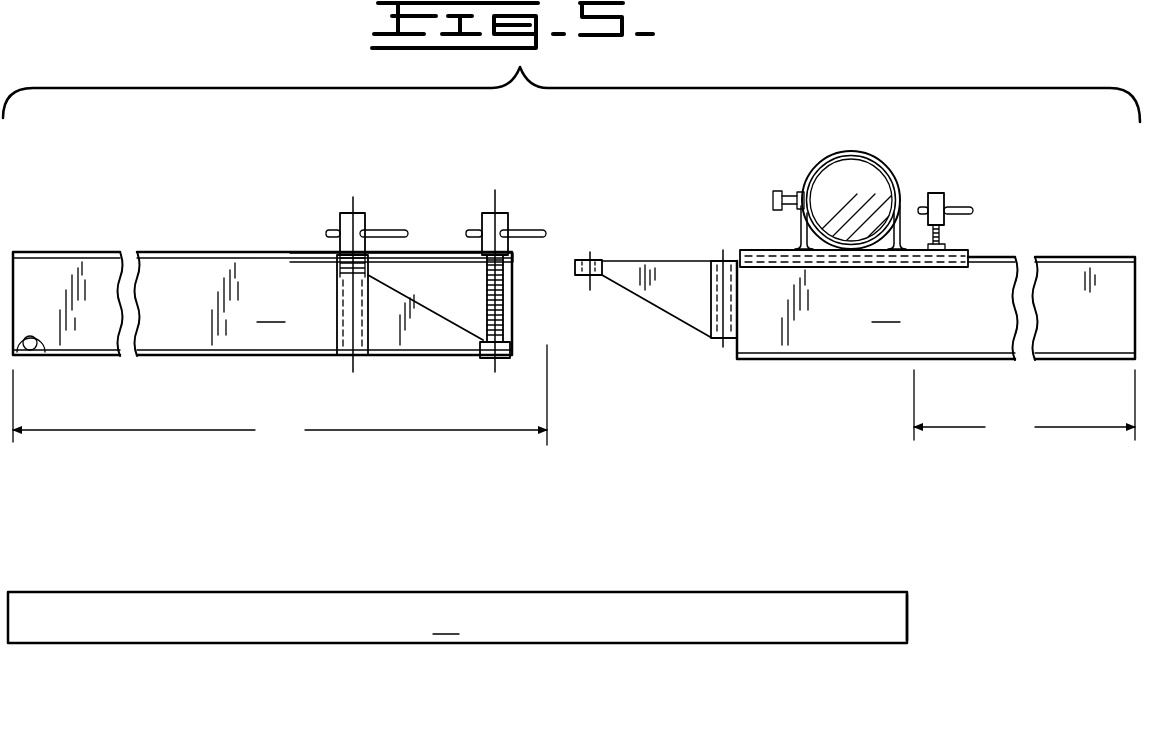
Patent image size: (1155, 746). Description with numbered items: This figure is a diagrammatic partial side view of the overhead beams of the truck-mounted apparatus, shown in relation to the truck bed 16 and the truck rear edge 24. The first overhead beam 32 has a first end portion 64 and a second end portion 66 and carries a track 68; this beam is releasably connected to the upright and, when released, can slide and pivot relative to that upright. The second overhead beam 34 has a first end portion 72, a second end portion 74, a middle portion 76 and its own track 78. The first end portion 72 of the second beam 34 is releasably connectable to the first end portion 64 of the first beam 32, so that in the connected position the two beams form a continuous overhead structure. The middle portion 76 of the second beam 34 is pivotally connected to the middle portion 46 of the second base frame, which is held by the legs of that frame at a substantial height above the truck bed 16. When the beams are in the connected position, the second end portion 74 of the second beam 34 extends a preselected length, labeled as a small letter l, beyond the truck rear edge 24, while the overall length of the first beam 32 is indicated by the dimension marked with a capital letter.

The bed 16 is at (489, 615).
The rear edge 24 is at (910, 620).
The first overhead beam 32 is at (280, 319).
The second overhead beam 34 is at (855, 281).
The middle portion 46 is at (858, 190).
The first end portion 64 is at (326, 368).
The second end portion 66 is at (88, 240).
The track 68 is at (255, 345).
The first end portion 72 is at (658, 246).
The second end portion 74 is at (1083, 243).
The middle portion 76 is at (1003, 243).
The track 78 is at (833, 350).